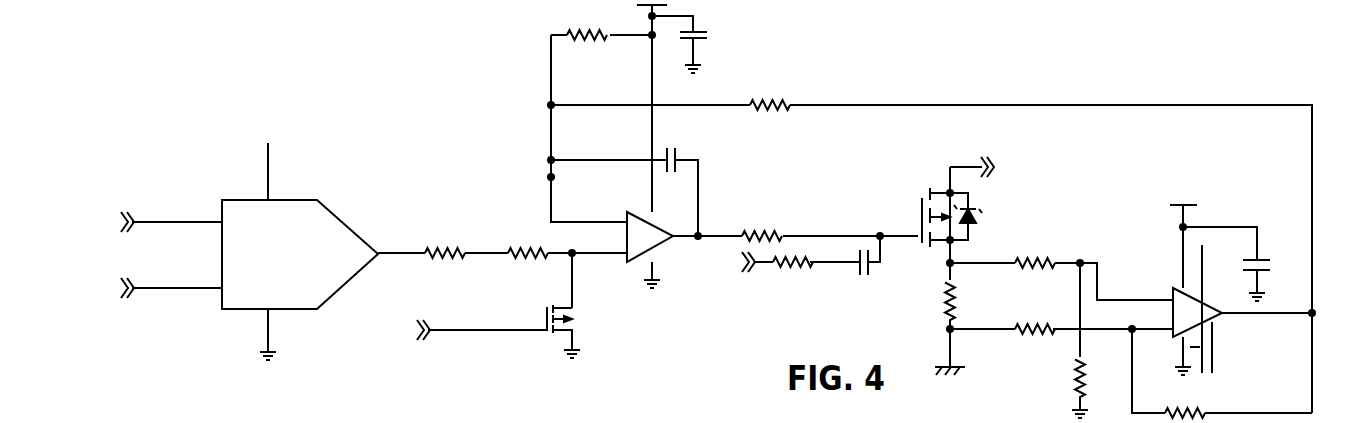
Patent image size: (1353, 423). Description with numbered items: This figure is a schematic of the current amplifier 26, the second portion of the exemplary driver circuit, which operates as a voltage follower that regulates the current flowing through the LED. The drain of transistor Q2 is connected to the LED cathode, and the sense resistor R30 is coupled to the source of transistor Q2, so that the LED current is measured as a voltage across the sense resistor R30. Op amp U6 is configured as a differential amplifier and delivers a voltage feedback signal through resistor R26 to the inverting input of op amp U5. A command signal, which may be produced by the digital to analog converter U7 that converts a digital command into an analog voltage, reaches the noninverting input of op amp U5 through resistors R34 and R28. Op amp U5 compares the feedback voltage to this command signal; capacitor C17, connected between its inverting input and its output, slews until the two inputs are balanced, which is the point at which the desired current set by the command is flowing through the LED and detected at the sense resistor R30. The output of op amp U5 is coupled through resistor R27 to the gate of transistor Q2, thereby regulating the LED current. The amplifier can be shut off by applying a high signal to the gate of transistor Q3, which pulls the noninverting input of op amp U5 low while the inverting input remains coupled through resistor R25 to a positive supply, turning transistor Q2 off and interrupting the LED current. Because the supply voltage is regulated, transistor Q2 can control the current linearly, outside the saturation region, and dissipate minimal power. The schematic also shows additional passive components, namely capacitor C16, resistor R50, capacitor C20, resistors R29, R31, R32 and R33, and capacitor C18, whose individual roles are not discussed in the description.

The current amplifier 26 is at (990, 90).
The resistor R25 is at (587, 27).
The capacitor C16 is at (691, 44).
The resistor R26 is at (770, 97).
The capacitor C17 is at (682, 150).
The op amp U5 is at (643, 243).
The resistor R34 is at (445, 264).
The resistor R28 is at (528, 266).
The transistor Q3 is at (573, 305).
The resistor R27 is at (762, 227).
The digital to analog converter (DAC) U7 is at (718, 272).
The resistor R50 is at (793, 274).
The capacitor C20 is at (875, 272).
The transistor Q2 is at (935, 215).
The resistor R29 is at (1035, 254).
The sense resistor R30 is at (962, 319).
The resistor R31 is at (1035, 320).
The resistor R32 is at (1096, 389).
The resistor R33 is at (1185, 404).
The op amp U6 is at (1201, 281).
The capacitor C18 is at (1238, 264).